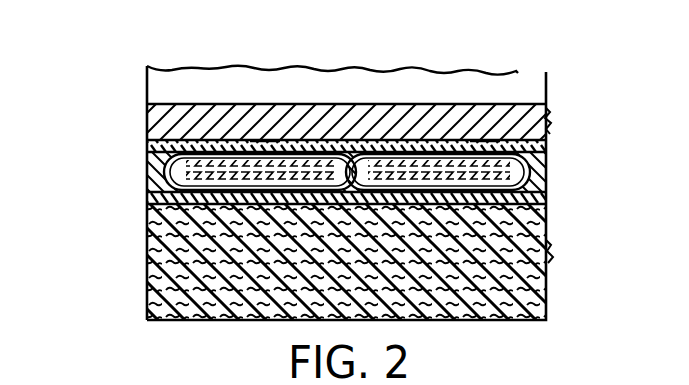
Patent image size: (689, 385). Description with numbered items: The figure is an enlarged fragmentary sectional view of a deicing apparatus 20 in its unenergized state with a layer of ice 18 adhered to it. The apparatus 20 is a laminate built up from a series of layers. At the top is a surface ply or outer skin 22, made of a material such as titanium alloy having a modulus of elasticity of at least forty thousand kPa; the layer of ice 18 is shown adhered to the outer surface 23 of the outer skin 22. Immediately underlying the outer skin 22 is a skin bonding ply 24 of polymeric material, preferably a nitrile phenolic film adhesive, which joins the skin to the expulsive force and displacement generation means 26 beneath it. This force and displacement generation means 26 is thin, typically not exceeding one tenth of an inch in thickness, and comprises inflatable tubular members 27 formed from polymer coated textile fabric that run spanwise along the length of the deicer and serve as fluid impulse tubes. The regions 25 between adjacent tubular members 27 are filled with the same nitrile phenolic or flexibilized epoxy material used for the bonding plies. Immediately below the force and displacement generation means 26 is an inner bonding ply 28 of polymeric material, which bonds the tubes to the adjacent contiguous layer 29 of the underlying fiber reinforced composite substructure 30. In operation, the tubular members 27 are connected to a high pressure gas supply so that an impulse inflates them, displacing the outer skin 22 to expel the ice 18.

The layer of ice 18 is at (312, 87).
The deicing apparatus 20 is at (557, 100).
The outer skin 22 is at (146, 110).
The outer surface 23 is at (513, 103).
The skin bonding ply 24 is at (146, 141).
The regions between adjacent tubes 25 is at (362, 165).
The expulsive force and displacement generation means 26 is at (137, 193).
The inflatable tubular members 27 is at (263, 145).
The inner bonding ply 28 is at (147, 200).
The adjacent contiguous layer 29 is at (147, 215).
The fiber reinforced composite substructure 30 is at (146, 282).